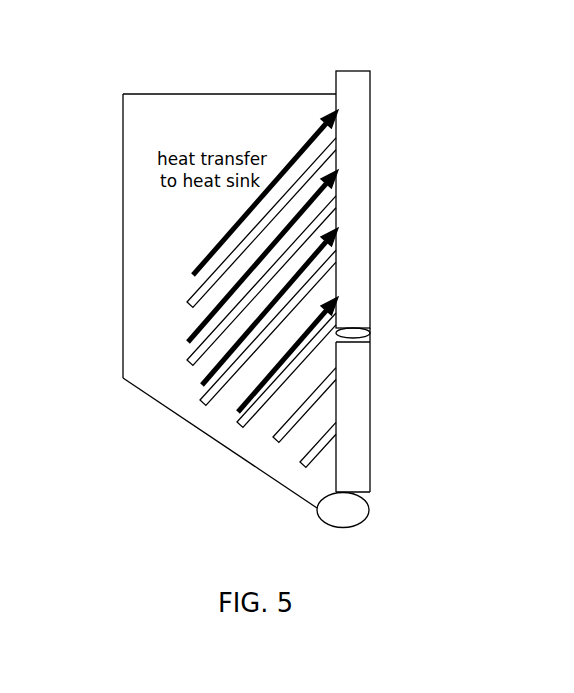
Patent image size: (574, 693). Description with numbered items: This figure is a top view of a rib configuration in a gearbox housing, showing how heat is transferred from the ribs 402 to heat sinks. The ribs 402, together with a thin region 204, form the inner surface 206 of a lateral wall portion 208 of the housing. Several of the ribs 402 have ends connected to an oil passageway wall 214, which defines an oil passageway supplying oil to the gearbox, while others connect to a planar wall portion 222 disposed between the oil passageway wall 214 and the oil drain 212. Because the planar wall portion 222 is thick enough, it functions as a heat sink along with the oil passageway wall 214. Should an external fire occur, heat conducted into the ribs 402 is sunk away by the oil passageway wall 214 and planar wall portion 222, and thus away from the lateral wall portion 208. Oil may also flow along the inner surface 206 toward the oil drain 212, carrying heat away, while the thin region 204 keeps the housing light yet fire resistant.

The thin region 204 is at (235, 122).
The inner surface 206 is at (135, 277).
The lateral wall portion 208 is at (123, 157).
The oil drain 212 is at (360, 513).
The oil passageway wall 214 is at (362, 118).
The planar wall portion 222 is at (358, 428).
The ribs 402 is at (333, 420).